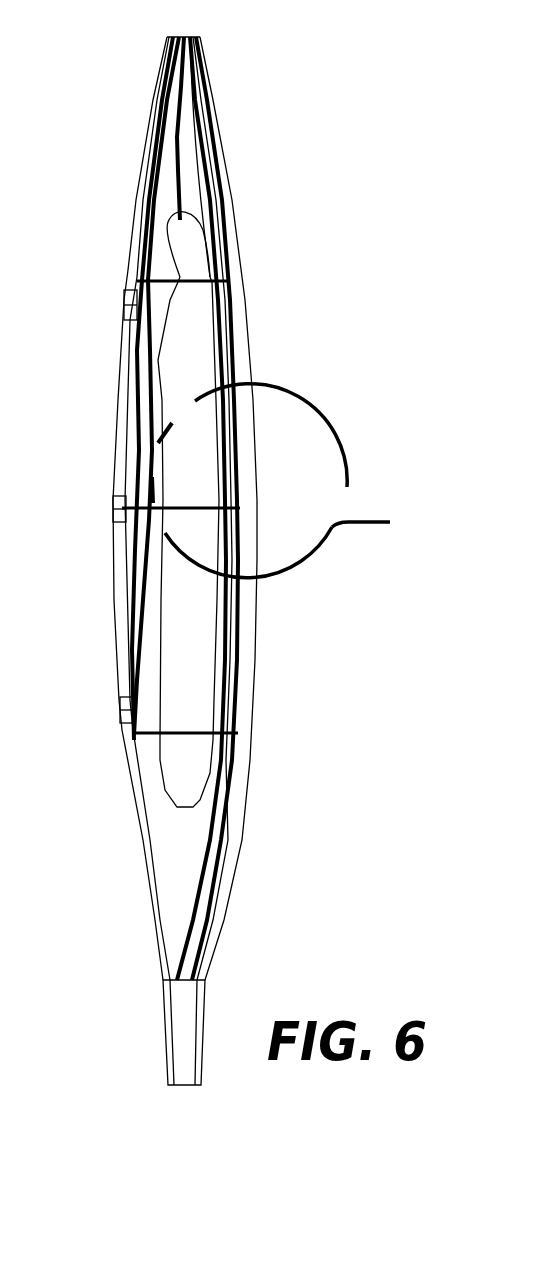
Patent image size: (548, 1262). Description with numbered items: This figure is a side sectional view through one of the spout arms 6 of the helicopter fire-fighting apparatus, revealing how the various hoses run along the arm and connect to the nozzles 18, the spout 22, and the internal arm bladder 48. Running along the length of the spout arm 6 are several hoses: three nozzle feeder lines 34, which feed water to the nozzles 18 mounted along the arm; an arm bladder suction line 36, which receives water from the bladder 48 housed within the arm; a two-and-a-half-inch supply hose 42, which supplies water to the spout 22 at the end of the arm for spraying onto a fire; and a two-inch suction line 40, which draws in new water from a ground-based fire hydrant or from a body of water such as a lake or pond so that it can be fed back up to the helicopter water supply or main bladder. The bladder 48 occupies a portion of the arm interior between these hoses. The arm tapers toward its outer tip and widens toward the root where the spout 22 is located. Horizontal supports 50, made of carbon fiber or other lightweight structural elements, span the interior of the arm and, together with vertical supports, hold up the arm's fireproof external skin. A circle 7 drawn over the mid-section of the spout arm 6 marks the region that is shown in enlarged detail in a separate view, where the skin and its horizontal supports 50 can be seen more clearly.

The spout arm 6 is at (283, 100).
The nozzles 18 is at (124, 307).
The nozzle feeder lines 34 is at (148, 177).
The arm bladder suction line 36 is at (181, 220).
The arm bladder 48 is at (213, 367).
The horizontal supports 50 is at (172, 508).
The suction line 40 is at (214, 878).
The supply hose 42 is at (205, 878).
The circle 7 is at (277, 481).
The spout 22 is at (163, 1009).